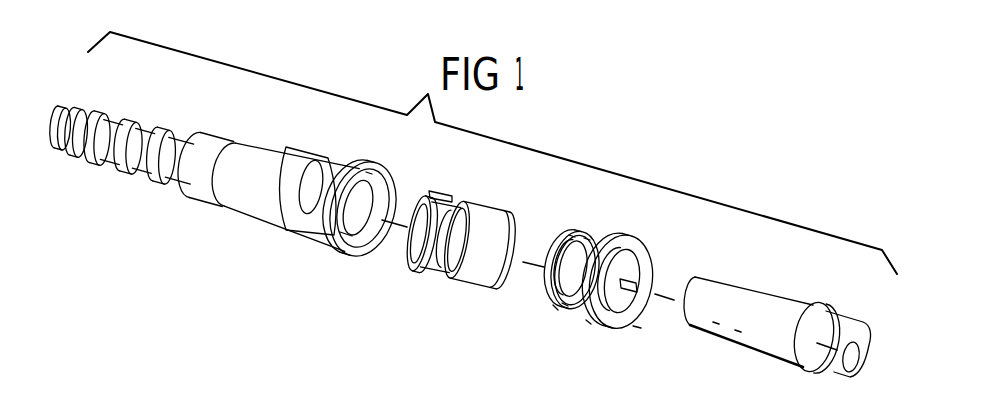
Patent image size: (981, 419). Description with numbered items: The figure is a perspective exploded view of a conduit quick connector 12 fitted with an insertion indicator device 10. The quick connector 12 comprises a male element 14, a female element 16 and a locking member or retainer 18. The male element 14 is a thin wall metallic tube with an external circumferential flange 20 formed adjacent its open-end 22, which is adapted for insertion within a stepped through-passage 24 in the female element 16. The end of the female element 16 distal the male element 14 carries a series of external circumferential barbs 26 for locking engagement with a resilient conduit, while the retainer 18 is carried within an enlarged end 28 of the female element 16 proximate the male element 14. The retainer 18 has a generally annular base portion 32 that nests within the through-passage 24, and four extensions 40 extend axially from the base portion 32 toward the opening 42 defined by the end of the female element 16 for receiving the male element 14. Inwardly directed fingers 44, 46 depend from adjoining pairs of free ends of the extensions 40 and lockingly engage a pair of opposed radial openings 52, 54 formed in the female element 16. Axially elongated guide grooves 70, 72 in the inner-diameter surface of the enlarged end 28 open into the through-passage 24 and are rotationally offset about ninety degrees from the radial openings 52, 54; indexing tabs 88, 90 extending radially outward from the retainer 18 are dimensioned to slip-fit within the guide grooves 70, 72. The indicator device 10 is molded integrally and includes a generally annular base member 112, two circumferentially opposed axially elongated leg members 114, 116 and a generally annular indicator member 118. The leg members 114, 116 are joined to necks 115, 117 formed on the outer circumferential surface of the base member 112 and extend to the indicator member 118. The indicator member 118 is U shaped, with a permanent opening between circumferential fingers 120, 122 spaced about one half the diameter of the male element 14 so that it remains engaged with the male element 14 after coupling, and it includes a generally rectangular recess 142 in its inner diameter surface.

The insertion indicator device 10 is at (672, 235).
The quick connector 12 is at (74, 70).
The male element 14 is at (876, 376).
The female element 16 is at (248, 208).
The locking member or retainer 18 is at (522, 196).
The external circumferential flange 20 is at (813, 370).
The open-end 22 is at (717, 327).
The stepped through-passage 24 is at (397, 185).
The external circumferential barbs 26 is at (121, 165).
The enlarged end 28 is at (307, 247).
The annular base portion 32 is at (403, 250).
The extensions 40 is at (471, 241).
The opening 42 is at (368, 257).
The male element engaging finger 44 is at (452, 265).
The male element engaging finger 46 is at (502, 270).
The radial opening 52 is at (298, 160).
The radial opening 54 is at (350, 183).
The guide groove 70 is at (363, 170).
The guide groove 72 is at (347, 253).
The indexing tab 88 is at (445, 192).
The indexing tab 90 is at (423, 267).
The base member 112 is at (547, 290).
The leg member 114 is at (587, 242).
The neck 115 is at (571, 237).
The leg member 116 is at (565, 307).
The neck 117 is at (555, 310).
The indicator member 118 is at (637, 327).
The circumferential finger 120 is at (604, 238).
The circumferential finger 122 is at (587, 323).
The rectangular recess 142 is at (640, 303).